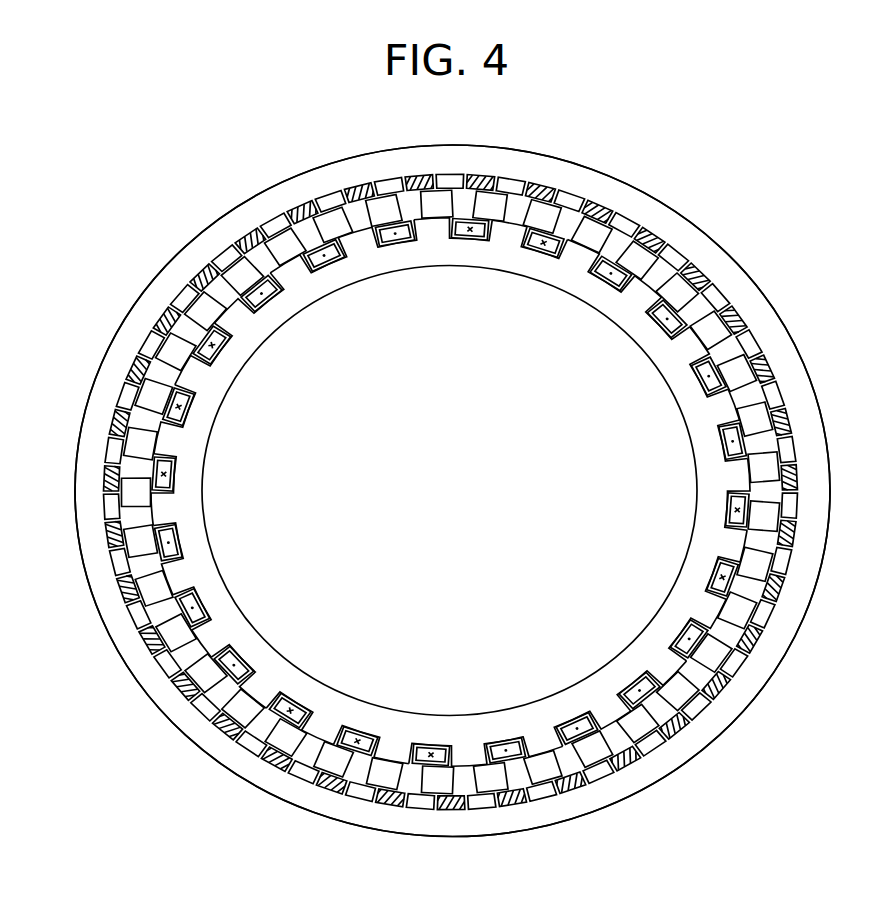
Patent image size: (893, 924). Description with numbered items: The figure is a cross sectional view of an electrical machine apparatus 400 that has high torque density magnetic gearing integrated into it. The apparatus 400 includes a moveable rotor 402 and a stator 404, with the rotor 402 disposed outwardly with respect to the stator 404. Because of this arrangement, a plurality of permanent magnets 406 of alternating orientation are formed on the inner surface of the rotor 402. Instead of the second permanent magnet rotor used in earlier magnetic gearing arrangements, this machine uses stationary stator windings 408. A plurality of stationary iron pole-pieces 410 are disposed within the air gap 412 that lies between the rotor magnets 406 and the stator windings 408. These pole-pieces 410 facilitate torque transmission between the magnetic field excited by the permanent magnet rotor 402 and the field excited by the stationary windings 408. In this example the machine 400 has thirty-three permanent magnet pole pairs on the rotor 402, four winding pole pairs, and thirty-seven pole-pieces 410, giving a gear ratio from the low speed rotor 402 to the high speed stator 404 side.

The electrical machine apparatus 400 is at (170, 105).
The moveable rotor 402 is at (783, 337).
The stator 404 is at (673, 358).
The permanent magnets 406 is at (517, 183).
The stationary stator windings 408 is at (390, 237).
The stationary iron pole-pieces 410 is at (140, 440).
The air gap 412 is at (218, 290).